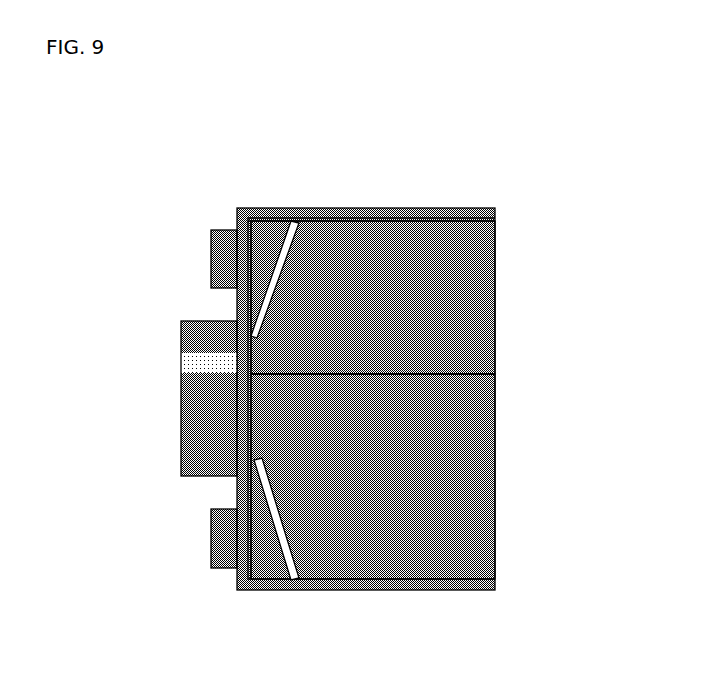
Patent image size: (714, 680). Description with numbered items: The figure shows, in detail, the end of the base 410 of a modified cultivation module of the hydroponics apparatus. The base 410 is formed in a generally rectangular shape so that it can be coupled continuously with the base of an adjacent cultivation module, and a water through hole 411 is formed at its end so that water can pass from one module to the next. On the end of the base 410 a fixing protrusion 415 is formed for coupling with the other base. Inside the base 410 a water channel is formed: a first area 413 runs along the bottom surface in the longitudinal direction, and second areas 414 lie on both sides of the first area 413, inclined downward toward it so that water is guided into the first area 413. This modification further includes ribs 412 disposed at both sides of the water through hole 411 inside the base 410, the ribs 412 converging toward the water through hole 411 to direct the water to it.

The base 410 is at (378, 87).
The water through hole 411 is at (158, 366).
The ribs 412 is at (280, 250).
The first area 413 is at (475, 396).
The second areas 414 is at (475, 285).
The fixing protrusion 415 is at (208, 243).